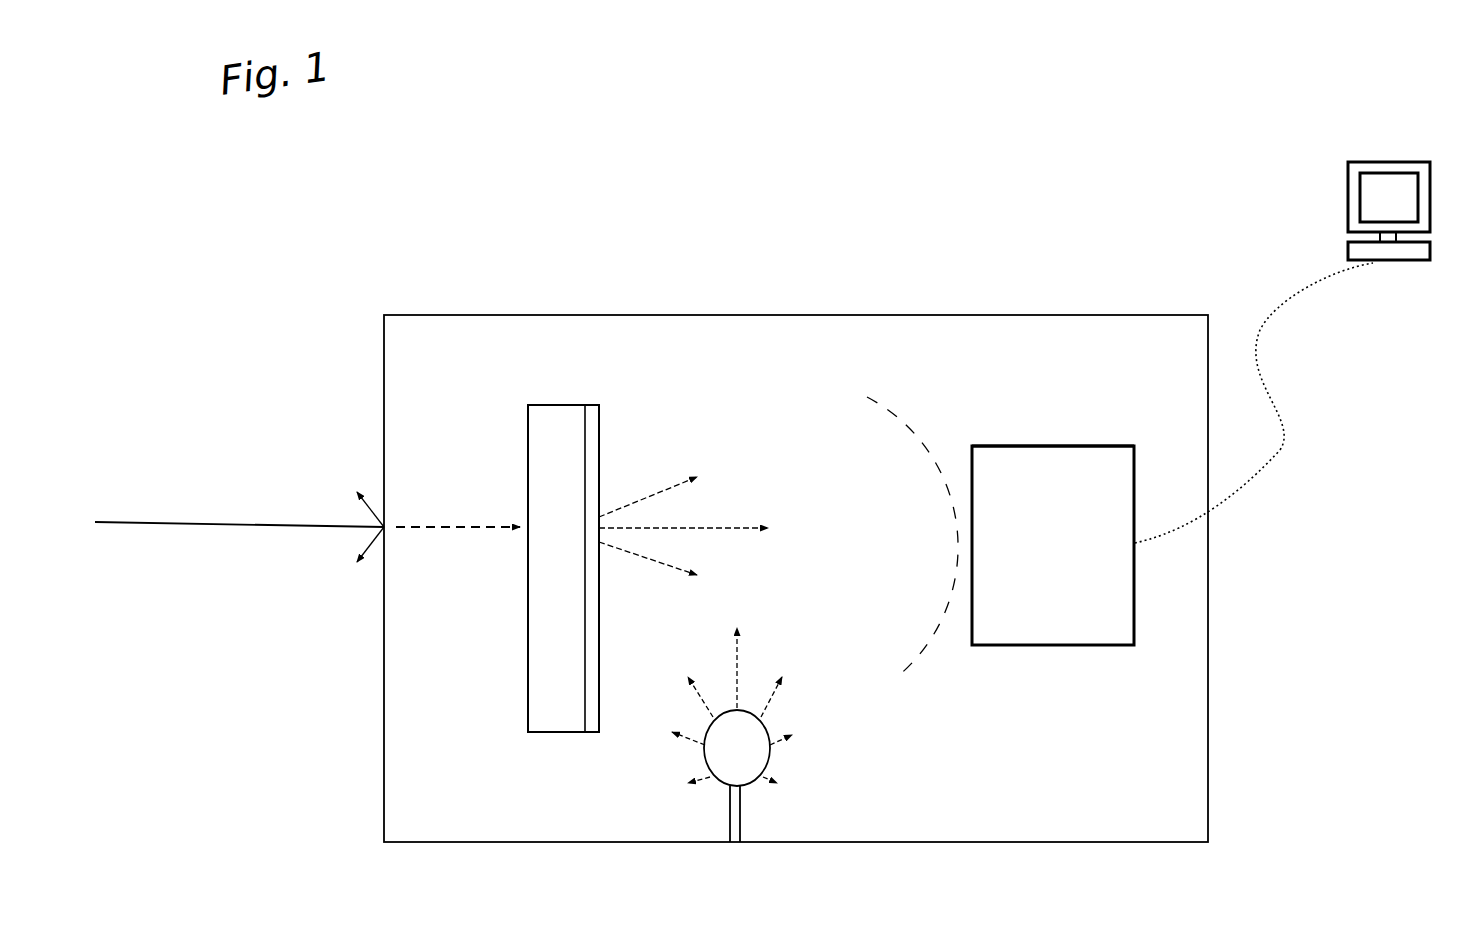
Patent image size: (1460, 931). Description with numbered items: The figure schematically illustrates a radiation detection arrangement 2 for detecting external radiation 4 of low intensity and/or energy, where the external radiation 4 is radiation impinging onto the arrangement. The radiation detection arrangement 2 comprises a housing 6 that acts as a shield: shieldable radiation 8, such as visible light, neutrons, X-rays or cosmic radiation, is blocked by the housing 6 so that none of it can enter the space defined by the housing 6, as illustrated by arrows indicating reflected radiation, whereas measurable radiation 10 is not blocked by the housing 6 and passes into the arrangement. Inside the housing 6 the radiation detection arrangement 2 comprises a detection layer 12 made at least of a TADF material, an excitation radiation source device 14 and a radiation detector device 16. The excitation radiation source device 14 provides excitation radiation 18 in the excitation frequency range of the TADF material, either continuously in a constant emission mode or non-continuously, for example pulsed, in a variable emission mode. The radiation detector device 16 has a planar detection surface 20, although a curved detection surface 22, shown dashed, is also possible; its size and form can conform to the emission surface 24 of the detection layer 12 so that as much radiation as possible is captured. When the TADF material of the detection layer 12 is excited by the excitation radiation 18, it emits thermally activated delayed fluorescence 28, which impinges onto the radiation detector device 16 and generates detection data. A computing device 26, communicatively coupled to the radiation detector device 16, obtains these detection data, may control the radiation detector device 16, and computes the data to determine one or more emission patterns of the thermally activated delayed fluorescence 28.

The radiation detection arrangement 2 is at (600, 245).
The external radiation 4 is at (183, 520).
The housing 6 is at (773, 312).
The shieldable radiation 8 is at (358, 511).
The measurable radiation 10 is at (425, 522).
The detection layer 12 is at (577, 403).
The excitation radiation source device 14 is at (808, 765).
The radiation detector device 16 is at (1050, 648).
The excitation radiation 18 is at (657, 737).
The planar detection surface 20 is at (973, 477).
The curved detection surface 22 is at (890, 412).
The emission surface 24 is at (600, 452).
The computing device 26 is at (1407, 265).
The thermally activated delayed fluorescence 28 is at (723, 515).